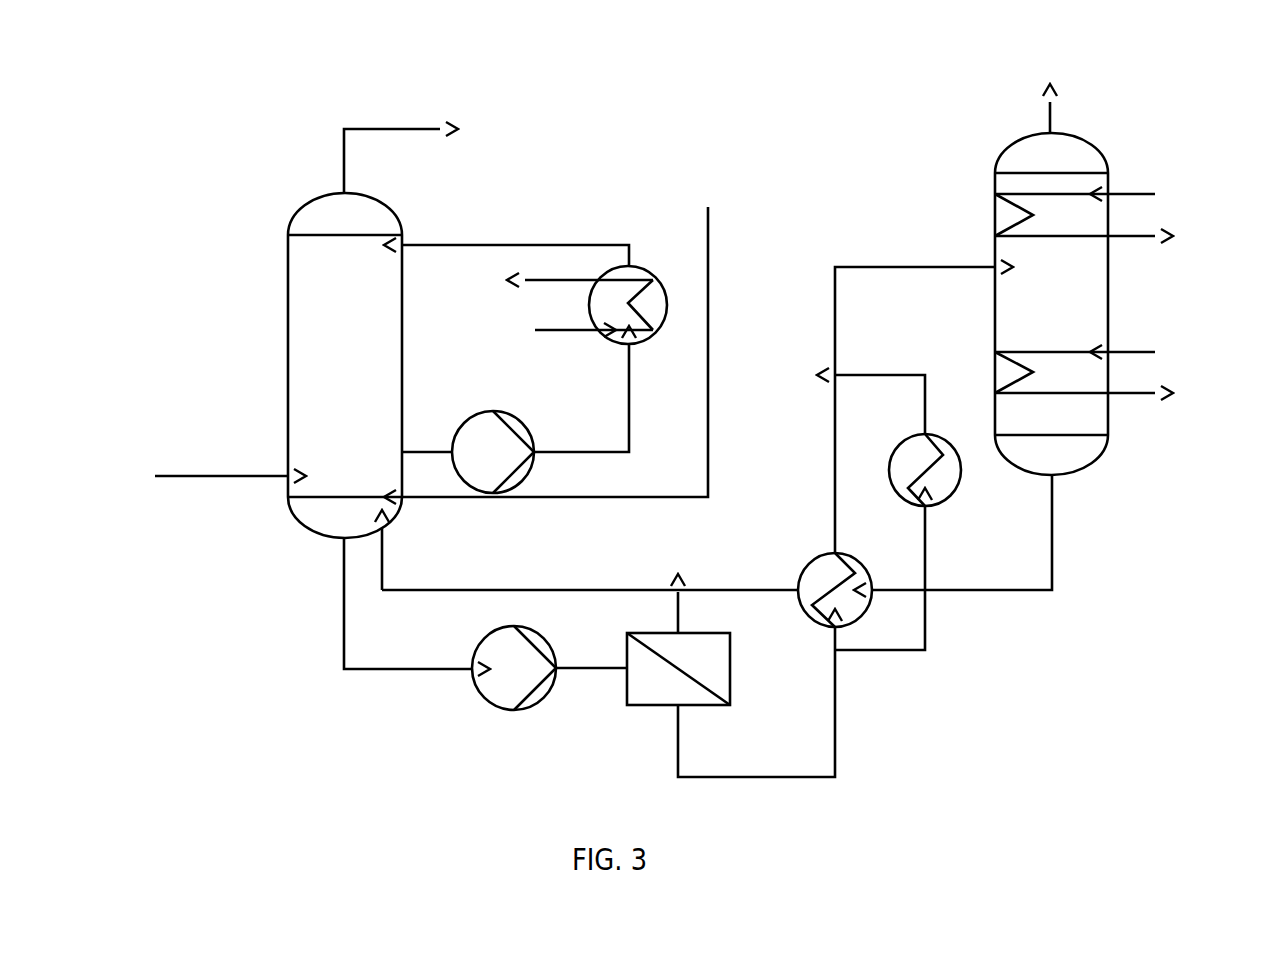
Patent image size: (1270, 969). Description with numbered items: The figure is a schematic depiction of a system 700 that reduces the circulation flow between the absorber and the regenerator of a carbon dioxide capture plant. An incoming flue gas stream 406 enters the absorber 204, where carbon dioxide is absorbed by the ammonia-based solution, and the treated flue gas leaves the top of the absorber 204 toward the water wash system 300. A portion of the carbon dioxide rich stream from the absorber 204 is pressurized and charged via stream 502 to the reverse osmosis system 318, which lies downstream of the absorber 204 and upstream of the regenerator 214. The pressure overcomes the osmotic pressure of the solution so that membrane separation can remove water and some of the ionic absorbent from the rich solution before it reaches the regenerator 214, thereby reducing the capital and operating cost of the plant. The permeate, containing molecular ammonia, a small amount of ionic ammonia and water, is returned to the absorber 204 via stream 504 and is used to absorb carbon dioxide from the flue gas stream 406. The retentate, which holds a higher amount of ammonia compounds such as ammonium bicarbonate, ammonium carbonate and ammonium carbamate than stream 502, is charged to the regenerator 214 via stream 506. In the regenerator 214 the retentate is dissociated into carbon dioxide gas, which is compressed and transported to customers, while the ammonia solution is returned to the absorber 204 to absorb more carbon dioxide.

The system 700 is at (710, 410).
The absorber 204 is at (373, 383).
The regenerator 214 is at (1079, 323).
The water wash system 300 is at (388, 122).
The flue gas stream 406 is at (221, 453).
The stream 502 is at (538, 658).
The stream 504 is at (724, 612).
The reverse osmosis system 318 is at (655, 710).
The stream 506 is at (802, 702).